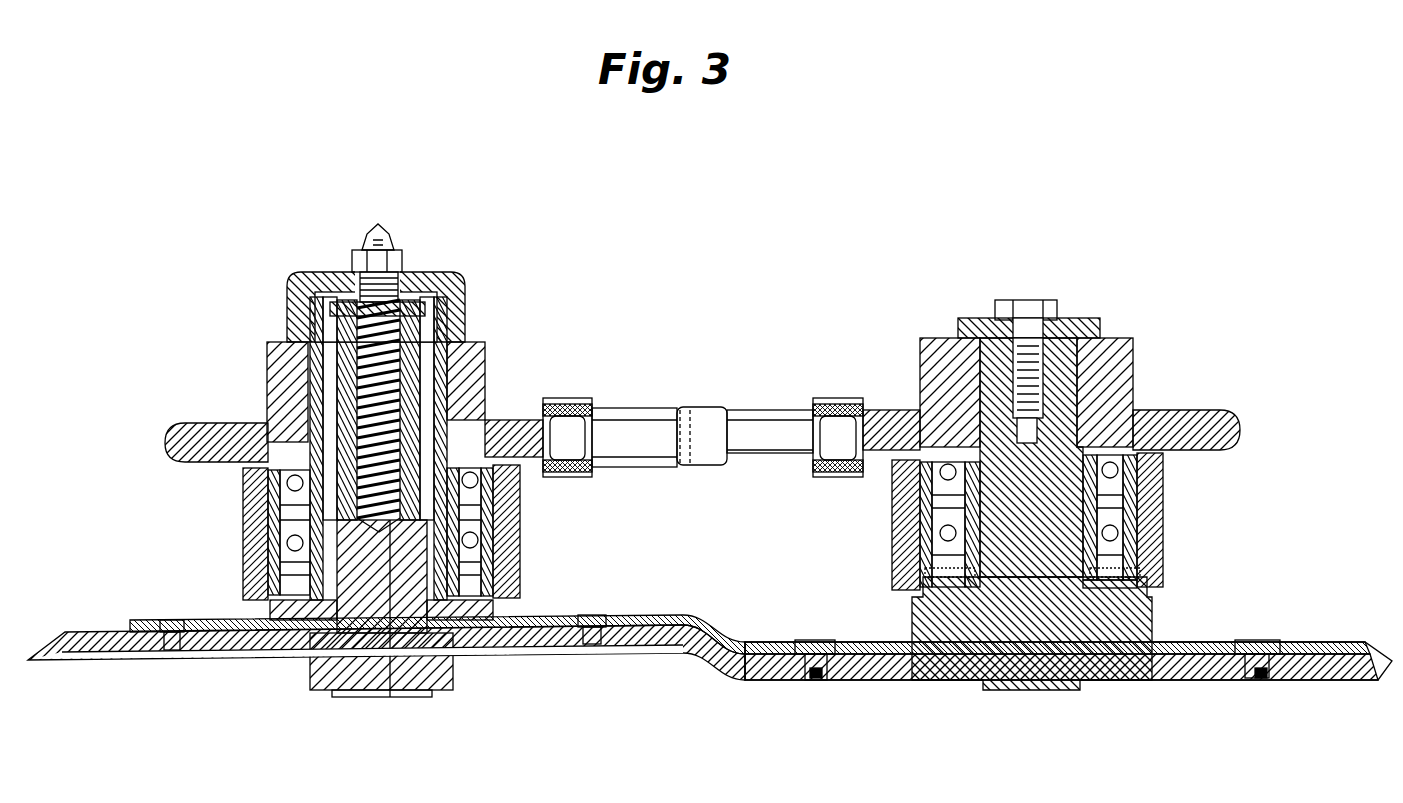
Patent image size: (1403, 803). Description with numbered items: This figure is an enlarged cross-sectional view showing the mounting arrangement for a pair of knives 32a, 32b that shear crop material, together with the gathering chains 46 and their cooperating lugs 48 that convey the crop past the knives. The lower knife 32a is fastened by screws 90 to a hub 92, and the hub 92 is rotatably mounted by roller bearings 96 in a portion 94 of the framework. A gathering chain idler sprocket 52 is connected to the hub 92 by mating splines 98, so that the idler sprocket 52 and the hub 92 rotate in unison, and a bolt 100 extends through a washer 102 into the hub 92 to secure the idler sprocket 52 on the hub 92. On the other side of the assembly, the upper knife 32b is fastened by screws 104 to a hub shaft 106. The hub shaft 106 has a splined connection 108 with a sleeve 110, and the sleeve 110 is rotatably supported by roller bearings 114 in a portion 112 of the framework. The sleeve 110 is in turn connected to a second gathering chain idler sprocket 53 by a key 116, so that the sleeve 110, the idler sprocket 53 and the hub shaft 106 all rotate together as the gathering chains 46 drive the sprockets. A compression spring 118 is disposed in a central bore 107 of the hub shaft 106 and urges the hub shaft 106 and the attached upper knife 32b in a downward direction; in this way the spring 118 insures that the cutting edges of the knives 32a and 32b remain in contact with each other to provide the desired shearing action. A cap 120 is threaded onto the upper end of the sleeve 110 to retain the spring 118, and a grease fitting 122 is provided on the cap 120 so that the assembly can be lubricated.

The lower knife 32a is at (915, 682).
The upper knife 32b is at (508, 660).
The gathering chain 46 is at (580, 398).
The lug 48 is at (763, 407).
The idler sprocket 52 is at (1222, 412).
The idler sprocket 53 is at (213, 425).
The screw 90 is at (838, 648).
The hub 92 is at (1045, 692).
The portion of framework 94 is at (1166, 578).
The roller bearing 96 is at (1168, 483).
The mating splines 98 is at (1135, 374).
The bolt 100 is at (1033, 305).
The washer 102 is at (1095, 320).
The screw 104 is at (172, 620).
The hub shaft 106 is at (345, 694).
The central bore 107 is at (391, 694).
The splined connection 108 is at (497, 510).
The sleeve 110 is at (312, 290).
The portion of framework 112 is at (521, 562).
The roller bearing 114 is at (262, 492).
The key 116 is at (484, 392).
The compression spring 118 is at (400, 268).
The cap 120 is at (465, 285).
The grease fitting 122 is at (380, 232).